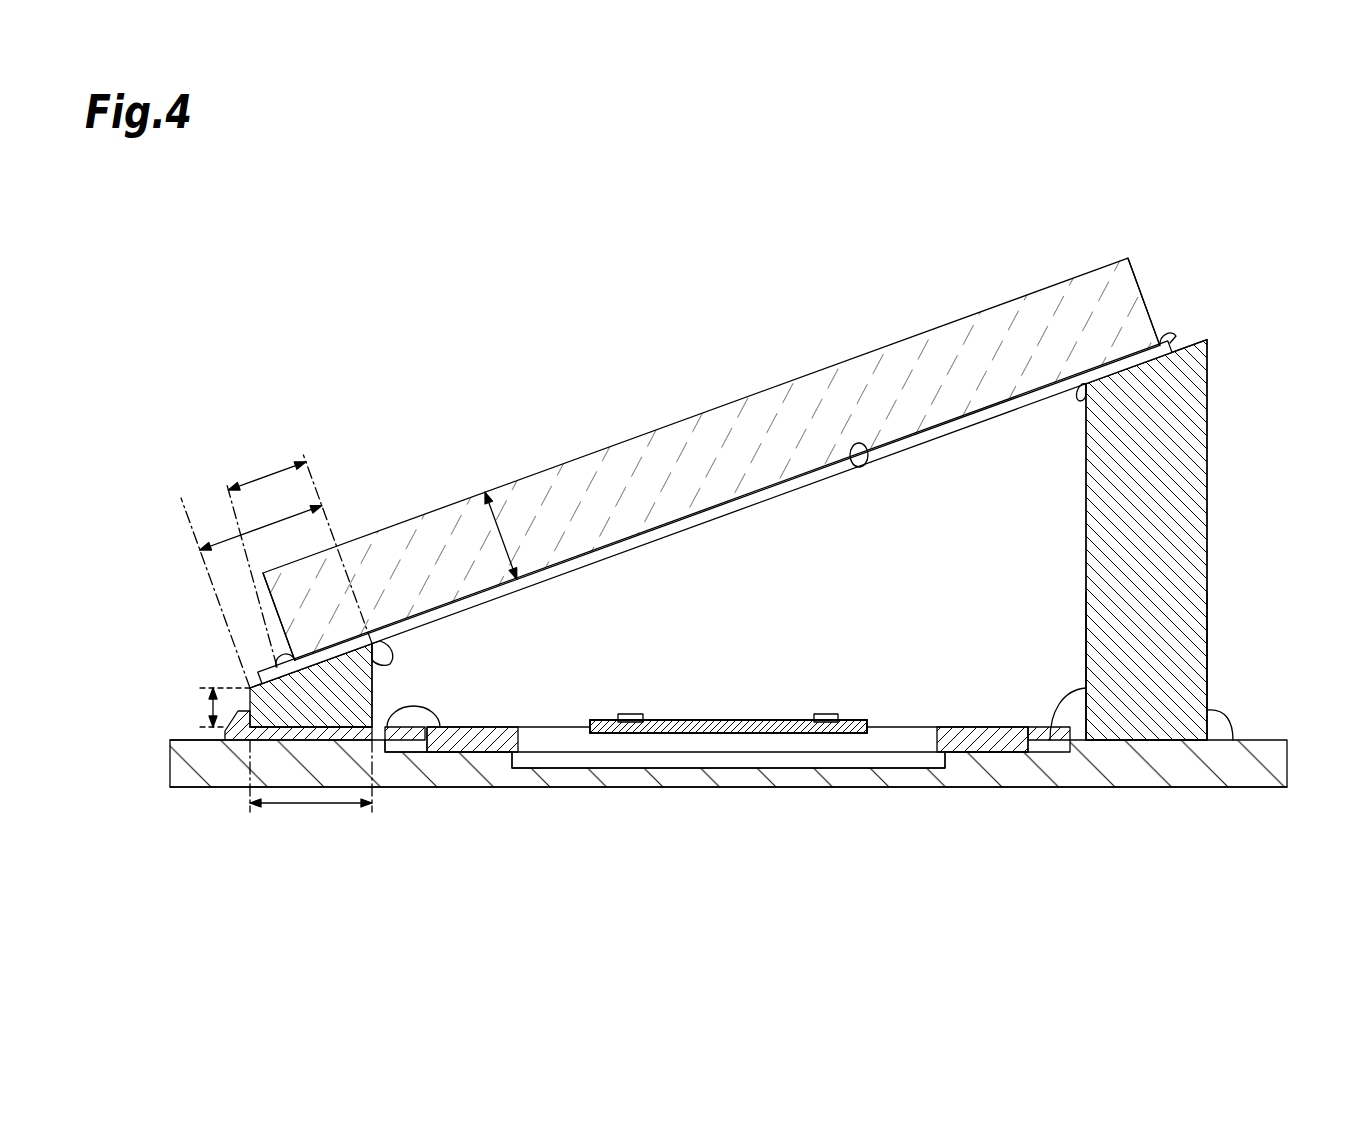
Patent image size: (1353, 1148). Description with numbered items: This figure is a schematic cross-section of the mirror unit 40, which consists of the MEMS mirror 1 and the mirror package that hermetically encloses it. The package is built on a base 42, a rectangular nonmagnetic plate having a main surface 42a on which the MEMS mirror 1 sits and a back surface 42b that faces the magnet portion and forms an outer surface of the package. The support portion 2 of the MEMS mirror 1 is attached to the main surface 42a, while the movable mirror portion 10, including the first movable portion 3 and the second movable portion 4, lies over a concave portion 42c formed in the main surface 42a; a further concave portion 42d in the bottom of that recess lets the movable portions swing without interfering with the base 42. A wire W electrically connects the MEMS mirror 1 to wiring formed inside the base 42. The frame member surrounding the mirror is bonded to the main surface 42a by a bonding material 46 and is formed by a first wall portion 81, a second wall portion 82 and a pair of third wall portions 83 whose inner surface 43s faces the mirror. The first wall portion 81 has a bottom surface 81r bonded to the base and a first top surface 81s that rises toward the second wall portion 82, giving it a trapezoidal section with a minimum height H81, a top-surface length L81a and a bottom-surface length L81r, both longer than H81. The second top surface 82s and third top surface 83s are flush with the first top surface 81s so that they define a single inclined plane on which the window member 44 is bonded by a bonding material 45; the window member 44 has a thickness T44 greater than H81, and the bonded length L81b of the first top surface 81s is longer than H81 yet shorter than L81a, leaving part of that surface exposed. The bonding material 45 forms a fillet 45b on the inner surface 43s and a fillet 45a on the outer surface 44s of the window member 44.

The MEMS mirror 1 is at (932, 665).
The support portion 2 is at (987, 727).
The first movable portion 3 is at (731, 718).
The second movable portion 4 is at (728, 726).
The movable mirror portion 10 is at (848, 712).
The mirror unit 40 is at (1228, 228).
The base 42 is at (706, 763).
The main surface 42a is at (180, 738).
The back surface 42b is at (645, 788).
The concave portion 42c is at (398, 746).
The concave portion 42d is at (570, 762).
The inner surface 43s is at (376, 690).
The window member 44 is at (658, 430).
The outer surface 44s is at (272, 602).
The bonding material 45 is at (681, 463).
The fillet 45a is at (273, 653).
The fillet 45b is at (392, 650).
The bonding material 46 is at (300, 733).
The first wall portion 81 is at (287, 761).
The first top surface 81s is at (268, 678).
The bottom surface 81r is at (273, 728).
The second wall portion 82 is at (1206, 507).
The second top surface 82s is at (1196, 340).
The third wall portion 83 is at (1030, 592).
The third top surface 83s is at (863, 470).
The wire W is at (436, 714).
The thickness of the window member T44 is at (505, 528).
The minimum value of the height of the first wall portion H81 is at (206, 725).
The length of the first top surface L81a is at (228, 545).
The length of the portion bonded to the window member L81b is at (270, 487).
The length of the bottom surface L81r is at (323, 707).